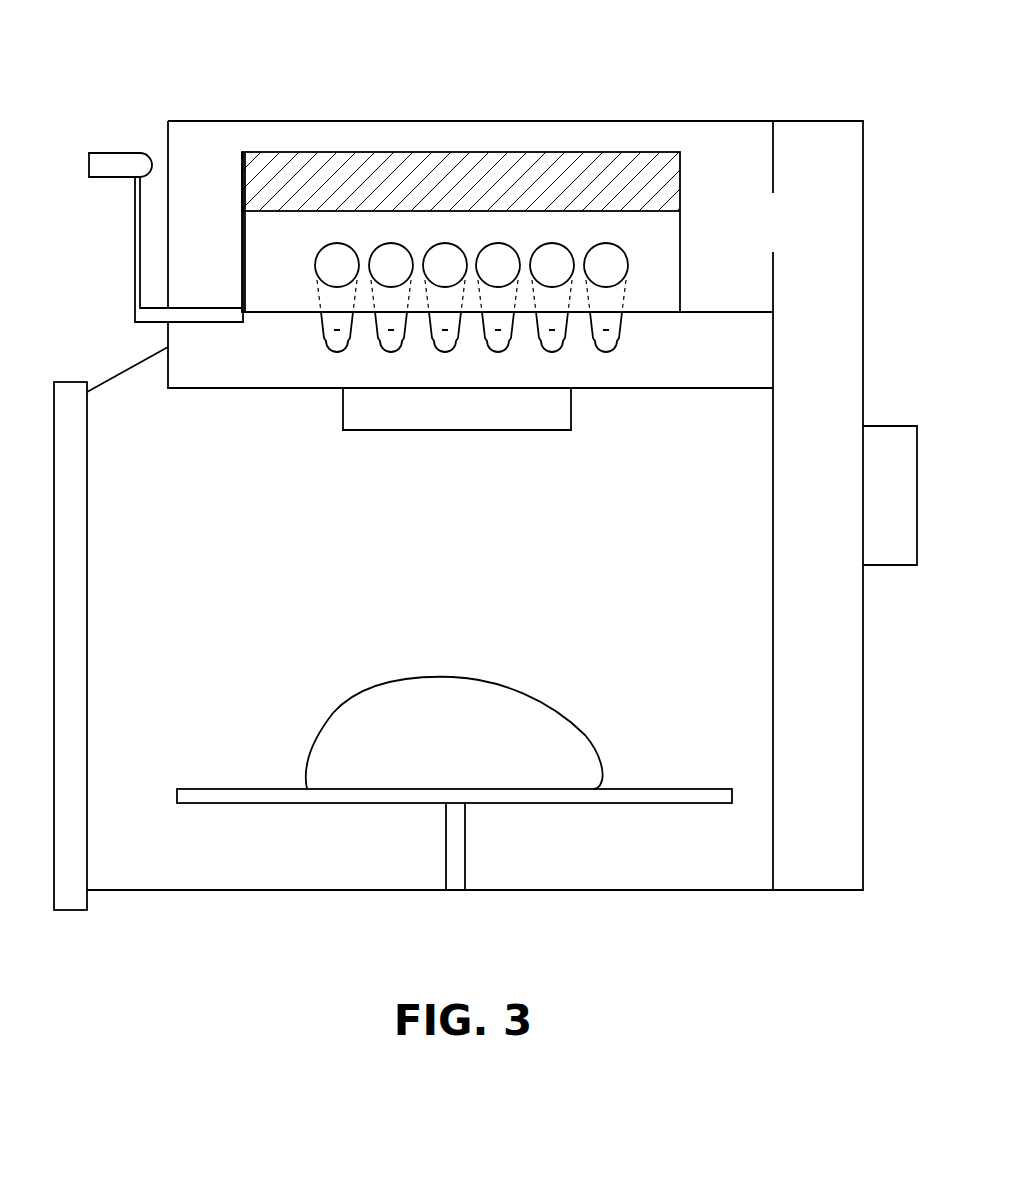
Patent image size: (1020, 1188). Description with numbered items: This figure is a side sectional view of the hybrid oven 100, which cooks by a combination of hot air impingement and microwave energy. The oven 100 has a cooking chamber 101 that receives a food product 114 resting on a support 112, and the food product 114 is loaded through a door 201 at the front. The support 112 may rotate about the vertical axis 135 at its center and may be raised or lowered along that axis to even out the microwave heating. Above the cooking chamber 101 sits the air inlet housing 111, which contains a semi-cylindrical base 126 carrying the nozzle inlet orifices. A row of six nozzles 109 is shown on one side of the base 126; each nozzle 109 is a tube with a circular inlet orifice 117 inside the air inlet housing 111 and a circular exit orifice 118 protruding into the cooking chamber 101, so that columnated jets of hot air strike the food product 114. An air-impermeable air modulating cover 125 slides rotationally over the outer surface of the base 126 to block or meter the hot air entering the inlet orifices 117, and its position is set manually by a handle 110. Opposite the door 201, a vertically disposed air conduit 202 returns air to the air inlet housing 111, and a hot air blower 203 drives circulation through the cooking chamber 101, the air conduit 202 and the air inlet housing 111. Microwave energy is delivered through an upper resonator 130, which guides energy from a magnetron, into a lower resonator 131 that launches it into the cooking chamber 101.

The hybrid oven 100 is at (523, 66).
The cooking chamber 101 is at (133, 425).
The nozzles 109 is at (335, 305).
The handle 110 is at (135, 247).
The air inlet housing 111 is at (711, 143).
The support 112 is at (658, 795).
The food product 114 is at (533, 716).
The circular inlet orifice 117 is at (332, 263).
The circular exit orifice 118 is at (336, 345).
The air modulating cover 125 is at (297, 160).
The semi-cylindrical base 126 is at (680, 246).
The upper resonator 130 is at (696, 372).
The lower resonator 131 is at (545, 410).
The vertical axis 135 is at (456, 855).
The door 201 is at (67, 883).
The air conduit 202 is at (820, 853).
The hot air blower 203 is at (888, 553).